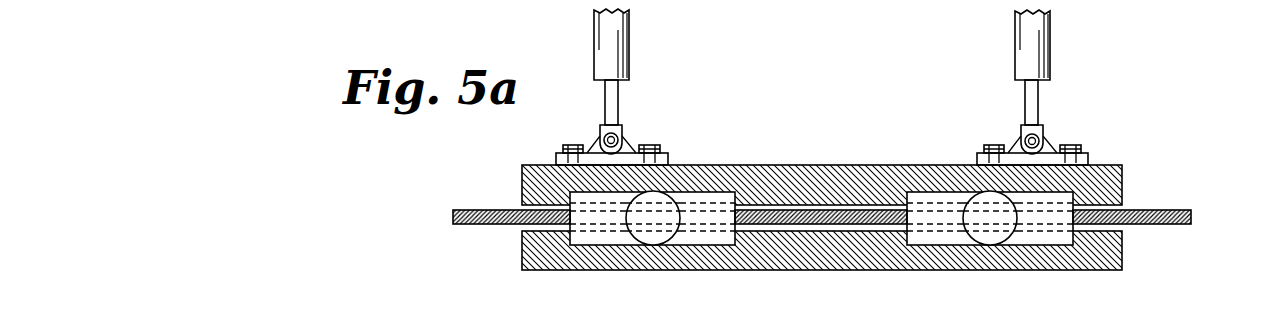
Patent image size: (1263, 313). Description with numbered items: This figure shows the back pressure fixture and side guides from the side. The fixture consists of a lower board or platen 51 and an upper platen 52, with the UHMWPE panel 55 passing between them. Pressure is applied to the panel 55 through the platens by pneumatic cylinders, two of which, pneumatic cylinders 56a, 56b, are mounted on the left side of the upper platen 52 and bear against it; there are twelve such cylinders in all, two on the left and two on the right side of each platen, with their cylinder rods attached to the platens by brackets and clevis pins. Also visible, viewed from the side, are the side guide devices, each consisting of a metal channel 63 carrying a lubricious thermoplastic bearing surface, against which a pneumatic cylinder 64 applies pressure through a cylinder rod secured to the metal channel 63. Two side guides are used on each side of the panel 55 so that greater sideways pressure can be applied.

The lower board or platen 51 is at (1122, 258).
The upper platen 52 is at (1122, 178).
The UHMWPE panel 55 is at (1190, 211).
The pneumatic cylinder 56a is at (1050, 45).
The pneumatic cylinder 56b is at (630, 45).
The metal channel 63 is at (718, 197).
The pneumatic cylinder 64 is at (657, 194).